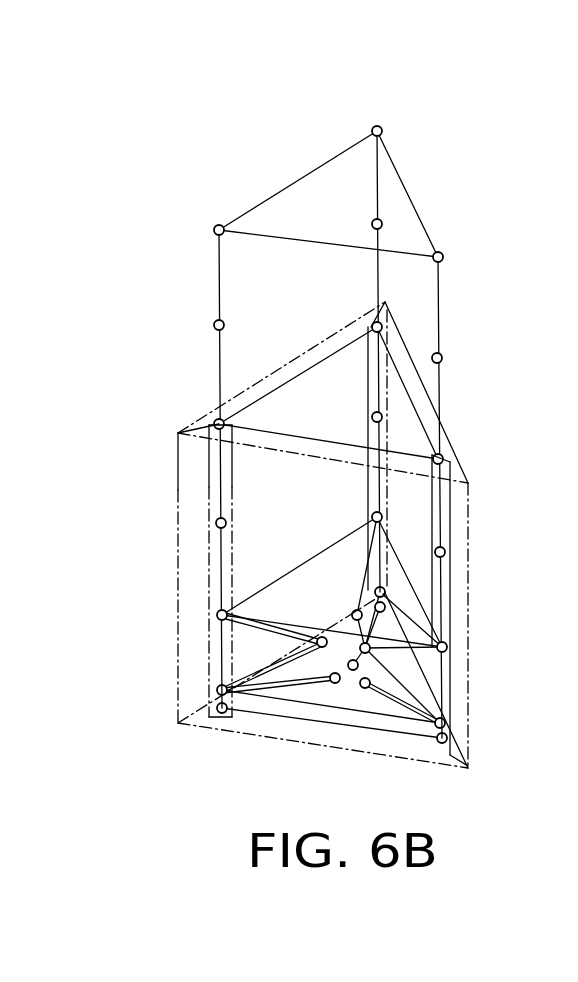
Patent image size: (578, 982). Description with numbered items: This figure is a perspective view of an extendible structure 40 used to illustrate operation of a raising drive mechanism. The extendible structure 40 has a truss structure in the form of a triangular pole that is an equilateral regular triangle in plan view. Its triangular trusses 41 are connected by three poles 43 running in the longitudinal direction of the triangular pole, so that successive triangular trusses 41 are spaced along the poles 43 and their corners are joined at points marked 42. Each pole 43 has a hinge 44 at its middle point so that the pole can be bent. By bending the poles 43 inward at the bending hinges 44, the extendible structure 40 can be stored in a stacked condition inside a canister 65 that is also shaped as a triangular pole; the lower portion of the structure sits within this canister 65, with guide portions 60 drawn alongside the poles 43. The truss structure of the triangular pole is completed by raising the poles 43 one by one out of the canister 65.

The extendible structure 40 is at (430, 188).
The triangular truss 41 is at (300, 180).
The corner joint 42 is at (377, 125).
The pole 43 is at (380, 172).
The hinge 44 is at (385, 226).
The guide sleeve 60 is at (395, 356).
The canister 65 is at (470, 658).